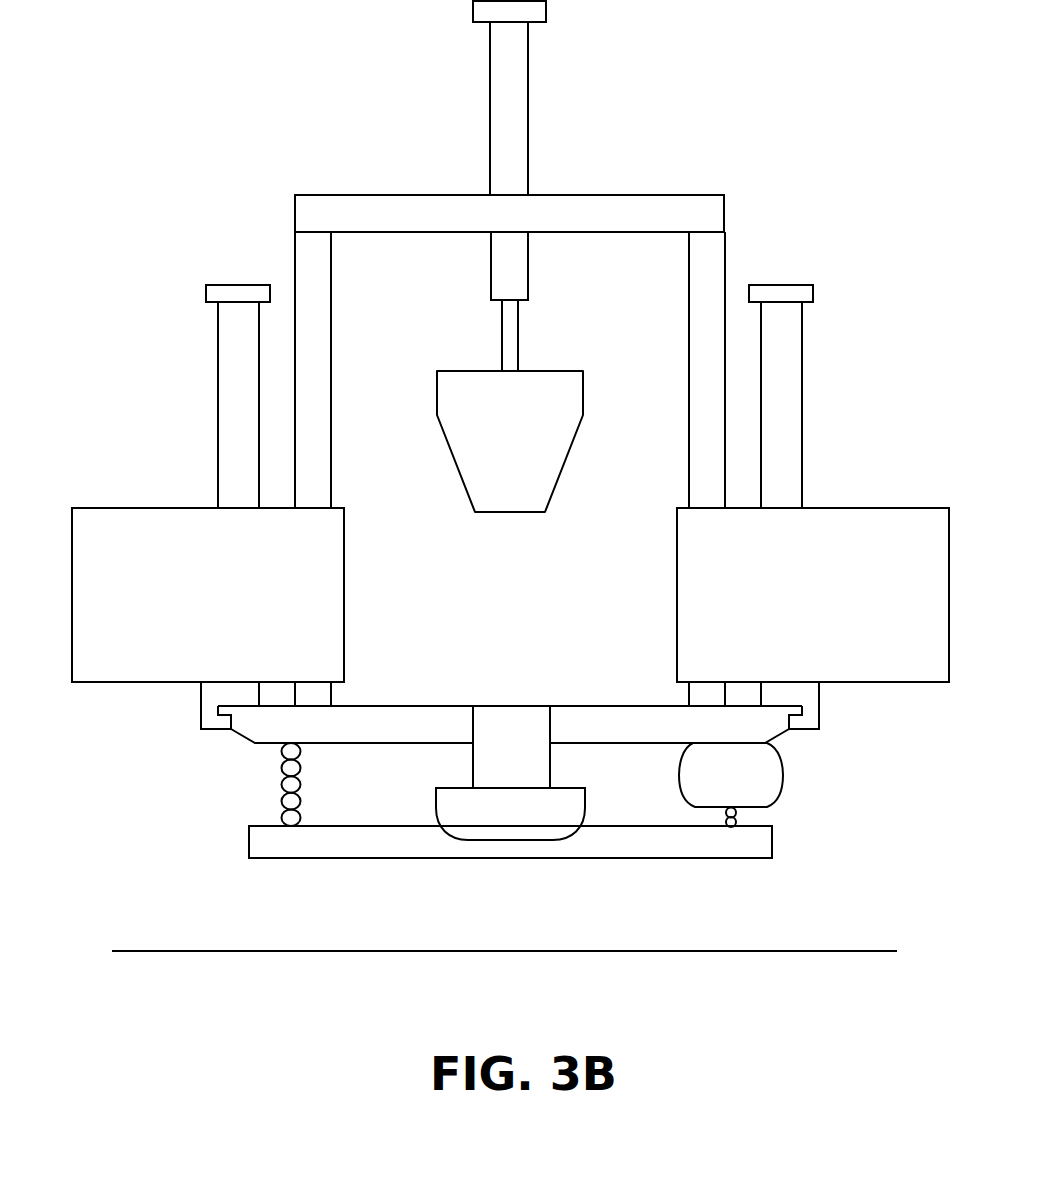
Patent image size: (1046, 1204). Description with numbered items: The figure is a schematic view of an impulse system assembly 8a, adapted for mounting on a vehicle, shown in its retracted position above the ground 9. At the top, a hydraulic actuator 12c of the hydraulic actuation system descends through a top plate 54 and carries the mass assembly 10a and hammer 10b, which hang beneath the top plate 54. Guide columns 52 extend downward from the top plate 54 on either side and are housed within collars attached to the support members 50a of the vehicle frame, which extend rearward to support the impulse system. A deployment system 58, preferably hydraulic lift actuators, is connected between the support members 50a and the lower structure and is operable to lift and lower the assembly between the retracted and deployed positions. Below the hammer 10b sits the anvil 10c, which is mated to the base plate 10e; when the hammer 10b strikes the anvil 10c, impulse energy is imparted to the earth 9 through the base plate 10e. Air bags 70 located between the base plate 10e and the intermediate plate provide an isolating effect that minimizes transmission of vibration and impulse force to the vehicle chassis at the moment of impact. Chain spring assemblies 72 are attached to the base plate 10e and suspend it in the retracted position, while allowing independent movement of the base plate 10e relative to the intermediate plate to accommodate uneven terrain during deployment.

The impulse system assembly 8a is at (776, 86).
The hydraulic actuator 12c is at (517, 63).
The top plate 54 is at (572, 207).
The guide columns 52 is at (317, 347).
The mass assembly 10a is at (510, 372).
The hammer 10b is at (566, 436).
The deployment system 58 is at (229, 370).
The support members 50a is at (143, 556).
The anvil 10c is at (538, 751).
The chain spring assemblies 72 is at (281, 785).
The air bags 70 is at (784, 778).
The base plate 10e is at (663, 858).
The ground 9 is at (695, 996).